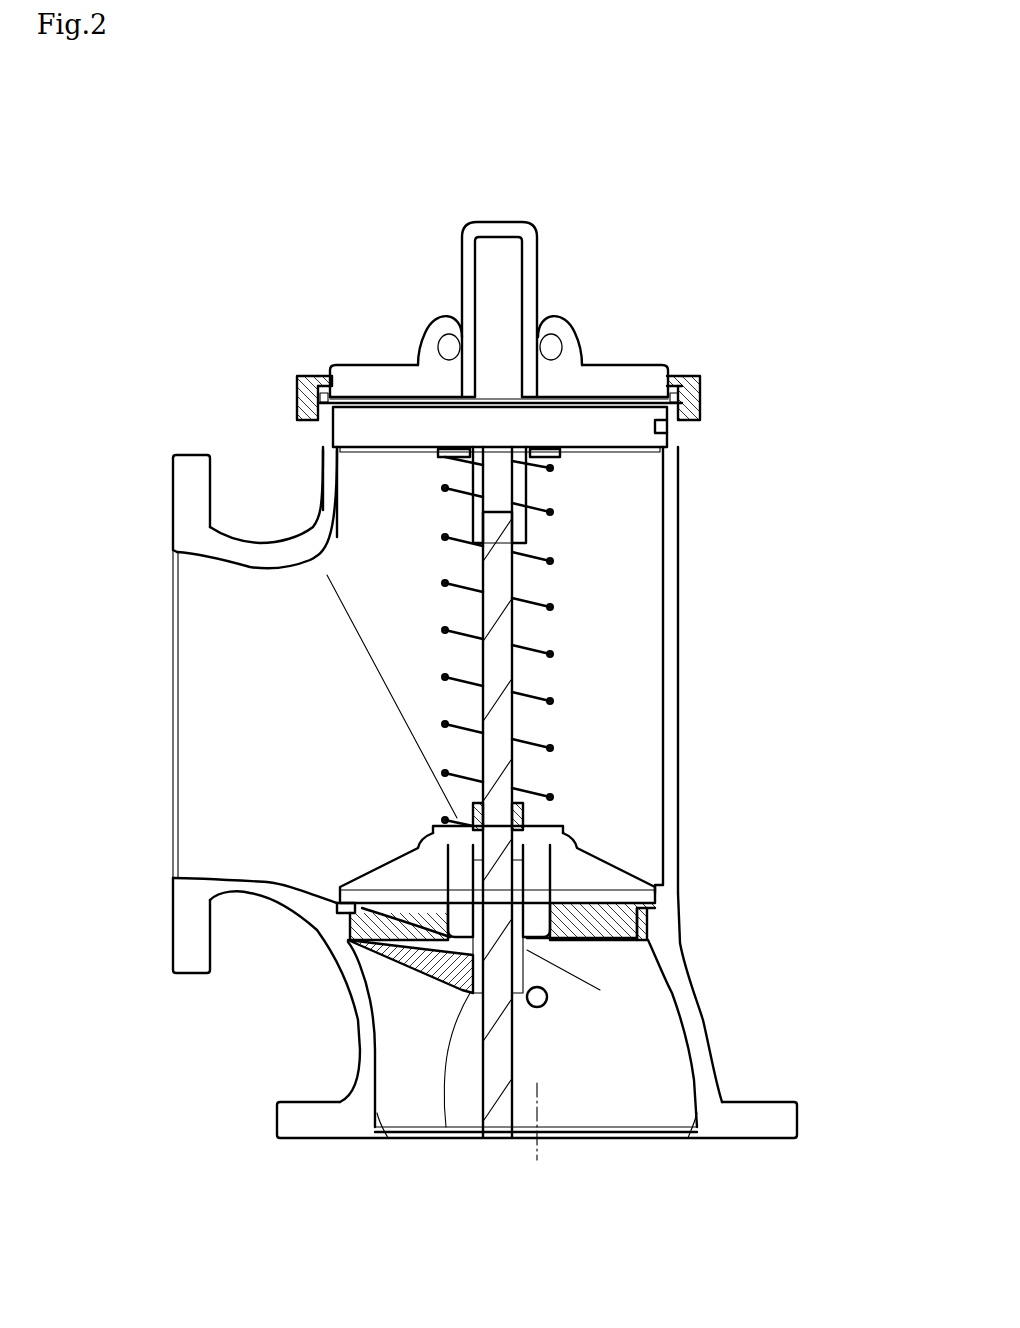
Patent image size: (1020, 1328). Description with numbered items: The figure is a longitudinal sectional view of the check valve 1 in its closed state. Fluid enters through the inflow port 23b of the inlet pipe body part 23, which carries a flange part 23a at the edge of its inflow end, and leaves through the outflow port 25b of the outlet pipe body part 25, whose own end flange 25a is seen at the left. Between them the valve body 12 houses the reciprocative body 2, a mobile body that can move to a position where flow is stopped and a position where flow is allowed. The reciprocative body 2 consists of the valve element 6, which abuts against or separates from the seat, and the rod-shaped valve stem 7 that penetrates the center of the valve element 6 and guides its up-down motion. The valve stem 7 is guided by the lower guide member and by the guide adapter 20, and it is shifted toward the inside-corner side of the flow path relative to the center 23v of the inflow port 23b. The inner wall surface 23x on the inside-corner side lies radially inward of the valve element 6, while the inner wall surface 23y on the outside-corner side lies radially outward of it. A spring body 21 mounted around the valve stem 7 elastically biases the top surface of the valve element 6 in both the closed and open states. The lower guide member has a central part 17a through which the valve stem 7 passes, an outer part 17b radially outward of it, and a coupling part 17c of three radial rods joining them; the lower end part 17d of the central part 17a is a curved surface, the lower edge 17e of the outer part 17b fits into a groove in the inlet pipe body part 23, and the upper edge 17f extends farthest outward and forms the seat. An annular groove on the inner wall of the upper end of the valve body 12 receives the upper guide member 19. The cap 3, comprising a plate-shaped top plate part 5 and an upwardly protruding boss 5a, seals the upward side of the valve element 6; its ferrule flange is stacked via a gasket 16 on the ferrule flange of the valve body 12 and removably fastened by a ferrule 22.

The check valve 1 is at (250, 190).
The reciprocative body 2 is at (735, 762).
The cap 3 is at (575, 270).
The top plate part 5 is at (603, 364).
The boss 5a is at (498, 221).
The valve element 6 is at (593, 850).
The valve stem 7 is at (502, 778).
The valve body 12 is at (680, 648).
The gasket 16 is at (685, 384).
The central part 17a is at (446, 1088).
The outer part 17b is at (350, 921).
The coupling part 17c is at (415, 990).
The lower end part 17d is at (446, 1127).
The lower edge 17e is at (347, 939).
The upper edge 17f is at (337, 906).
The upper guide member 19 is at (593, 455).
The guide adapter 20 is at (528, 522).
The spring body 21 is at (552, 692).
The ferrule 22 is at (700, 392).
The inlet pipe body part 23 is at (697, 987).
The flange part 23a is at (797, 1112).
The inflow port 23b is at (605, 1138).
The center of the inflow port 23v is at (538, 1152).
The inner wall surface on inside-corner side 23x is at (388, 1138).
The inner wall surface on outside-corner side 23y is at (688, 1138).
The outlet pipe body part 25 is at (250, 540).
The outlet pipe body part flange 25a is at (190, 454).
The outflow port 25b is at (176, 801).